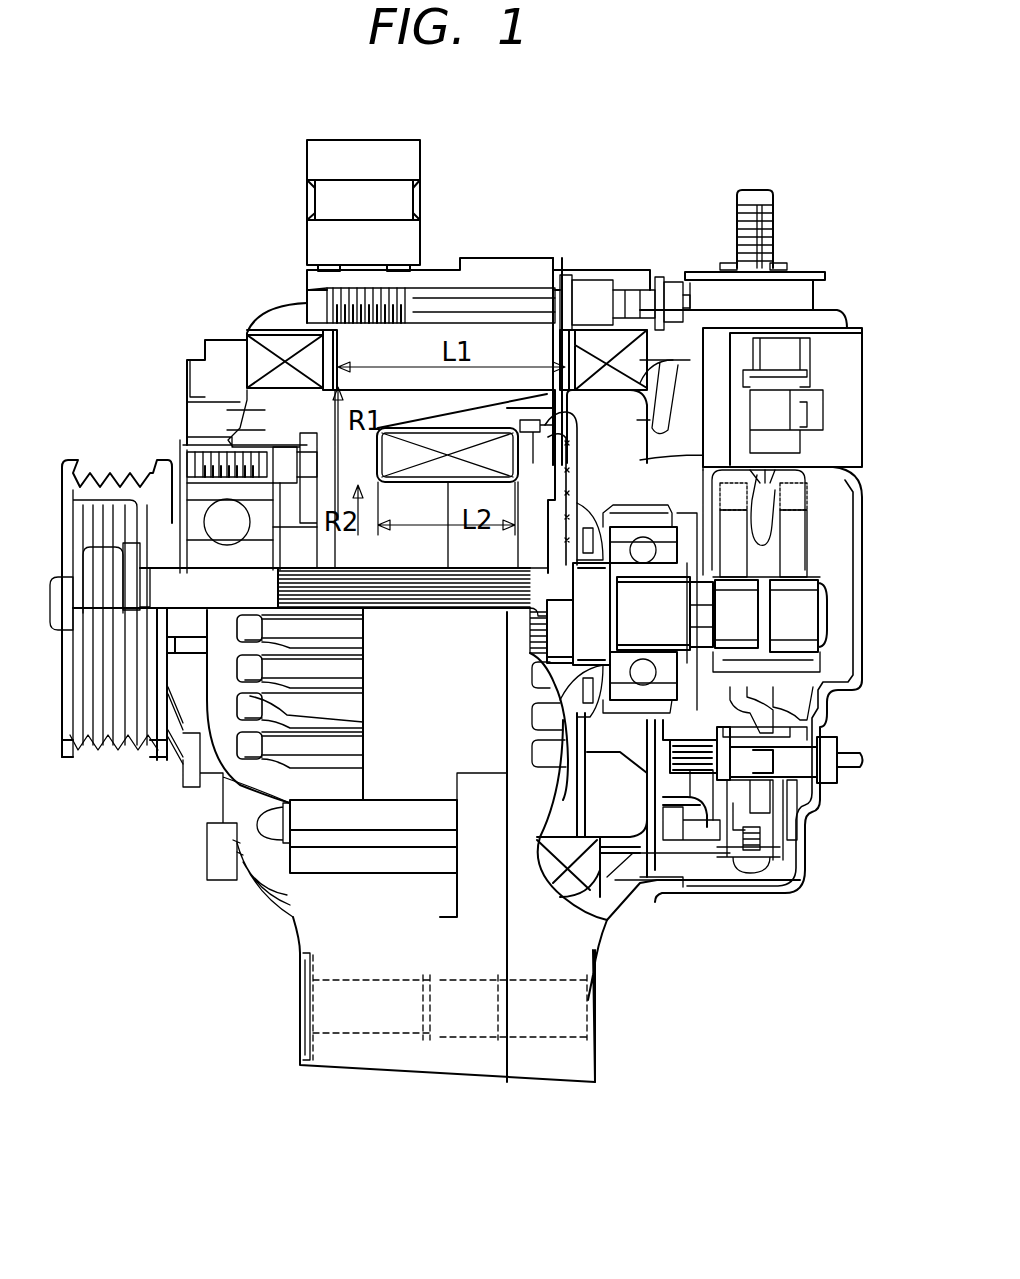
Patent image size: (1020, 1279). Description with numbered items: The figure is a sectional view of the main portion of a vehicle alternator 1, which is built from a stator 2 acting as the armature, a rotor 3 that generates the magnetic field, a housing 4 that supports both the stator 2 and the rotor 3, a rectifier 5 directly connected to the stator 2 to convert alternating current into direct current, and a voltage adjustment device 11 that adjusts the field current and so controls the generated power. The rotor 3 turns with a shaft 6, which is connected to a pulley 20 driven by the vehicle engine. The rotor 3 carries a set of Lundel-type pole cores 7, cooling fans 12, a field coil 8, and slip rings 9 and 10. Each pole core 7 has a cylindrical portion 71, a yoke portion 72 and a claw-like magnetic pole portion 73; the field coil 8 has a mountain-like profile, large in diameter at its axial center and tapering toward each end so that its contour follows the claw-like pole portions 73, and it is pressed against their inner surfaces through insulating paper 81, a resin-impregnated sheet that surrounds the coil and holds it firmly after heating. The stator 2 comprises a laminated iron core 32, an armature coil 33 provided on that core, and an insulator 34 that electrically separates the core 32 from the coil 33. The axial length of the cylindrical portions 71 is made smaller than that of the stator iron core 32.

The alternator 1 is at (645, 972).
The stator 2 is at (637, 403).
The rotor 3 is at (290, 398).
The housing 4 is at (457, 1068).
The rectifier 5 is at (765, 805).
The shaft 6 is at (157, 530).
The pole core 7 is at (400, 555).
The field coil 8 is at (407, 433).
The slip ring 9 is at (805, 625).
The slip ring 10 is at (740, 640).
The voltage adjustment device 11 is at (842, 365).
The cooling fan 12 is at (267, 412).
The pulley 20 is at (90, 460).
The iron core 32 is at (493, 335).
The armature coil 33 is at (640, 362).
The insulator 34 is at (568, 360).
The cylindrical portion 71 is at (513, 507).
The yoke portion 72 is at (760, 458).
The claw-like magnetic pole portion 73 is at (418, 402).
The insulating paper 81 is at (515, 433).